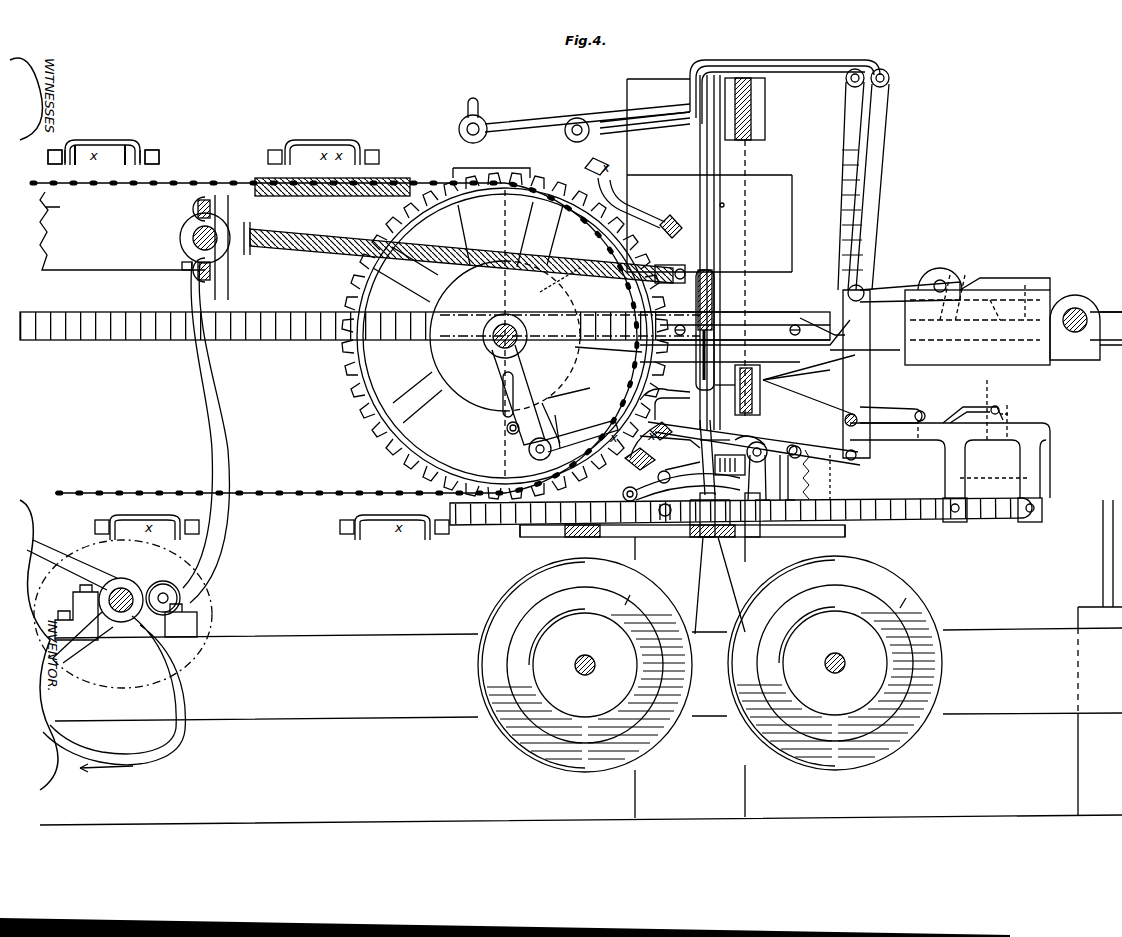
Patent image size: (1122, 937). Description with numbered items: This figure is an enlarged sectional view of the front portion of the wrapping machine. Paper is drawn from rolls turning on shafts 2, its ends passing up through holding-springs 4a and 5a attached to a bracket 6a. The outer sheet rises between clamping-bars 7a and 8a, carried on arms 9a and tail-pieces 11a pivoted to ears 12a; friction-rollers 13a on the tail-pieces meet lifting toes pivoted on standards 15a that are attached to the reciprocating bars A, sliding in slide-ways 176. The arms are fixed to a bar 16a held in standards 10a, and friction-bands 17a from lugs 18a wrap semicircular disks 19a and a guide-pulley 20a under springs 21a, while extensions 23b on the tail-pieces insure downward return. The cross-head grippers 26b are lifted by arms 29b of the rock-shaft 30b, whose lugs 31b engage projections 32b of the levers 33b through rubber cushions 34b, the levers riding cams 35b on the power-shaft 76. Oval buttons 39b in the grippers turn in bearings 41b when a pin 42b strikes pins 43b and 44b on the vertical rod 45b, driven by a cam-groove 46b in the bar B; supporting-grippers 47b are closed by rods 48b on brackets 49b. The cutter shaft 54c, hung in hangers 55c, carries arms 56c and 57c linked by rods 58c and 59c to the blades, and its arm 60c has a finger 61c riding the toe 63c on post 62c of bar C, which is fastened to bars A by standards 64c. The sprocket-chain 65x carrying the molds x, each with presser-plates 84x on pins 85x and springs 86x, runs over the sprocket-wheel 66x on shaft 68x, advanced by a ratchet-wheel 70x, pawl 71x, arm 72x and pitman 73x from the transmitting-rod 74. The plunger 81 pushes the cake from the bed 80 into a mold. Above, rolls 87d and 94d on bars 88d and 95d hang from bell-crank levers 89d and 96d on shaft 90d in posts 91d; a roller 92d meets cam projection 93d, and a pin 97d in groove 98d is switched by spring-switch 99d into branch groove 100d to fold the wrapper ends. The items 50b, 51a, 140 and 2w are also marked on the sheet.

The shafts 2 is at (489, 617).
The holding-spring 4a is at (730, 508).
The holding-spring 5a is at (673, 501).
The bracket 6a is at (701, 512).
The clamping-bar 7a is at (702, 457).
The clamping-bar 8a is at (718, 441).
The arms 9a is at (730, 458).
The standards 10a is at (760, 490).
The tail-pieces 11a is at (670, 452).
The ears 12a is at (686, 474).
The friction-rollers 13a is at (623, 494).
The standards 15a is at (655, 477).
The bar 16a is at (762, 471).
The friction-bands 17a is at (787, 472).
The lugs 18a is at (756, 433).
The semicircular disks 19a is at (787, 490).
The guide-pulley 20a is at (827, 474).
The springs 21a is at (821, 474).
The extensions 23b is at (672, 260).
The spring-grippers 26b is at (693, 330).
The arms 29b is at (575, 282).
The rock-shaft 30b is at (193, 240).
The lugs 31b is at (238, 292).
The lateral projections 32b is at (196, 285).
The levers 33b is at (200, 390).
The rubber cushions 34b is at (184, 232).
The cams 35b is at (182, 688).
The oval-shaped buttons 39b is at (676, 405).
The bearings 41b is at (730, 62).
The pin 42b is at (760, 386).
The pin 43b is at (724, 205).
The pin 44b is at (748, 381).
The vertical rod 45b is at (725, 290).
The cam-groove 46b is at (745, 328).
The supporting-grippers 47b is at (710, 252).
The rods 48b is at (730, 216).
The brackets 49b is at (752, 156).
The pipe 50b is at (665, 402).
The clamp 51a is at (651, 446).
The shaft 54c is at (831, 417).
The hangers 55c is at (891, 406).
The arms 56c is at (796, 390).
The arms 57c is at (754, 443).
The rods 58c is at (809, 385).
The rods 59c is at (788, 440).
The rearwardly-projecting arm 60c is at (920, 410).
The laterally-projecting finger 61c is at (969, 405).
The vertically-adjustable post 62c is at (1018, 412).
The angular toe 63c is at (962, 405).
The standards 64c is at (995, 473).
The sprocket-chain 65x is at (95, 190).
The sprocket-wheel 66x is at (358, 373).
The shaft 68x is at (492, 333).
The ratchet-wheel 70x is at (500, 395).
The pawl 71x is at (522, 425).
The arm 72x is at (528, 445).
The pitman 73x is at (581, 435).
The transmitting-rod 74 is at (1109, 315).
The power-shaft 76 is at (128, 585).
The bed 80 is at (820, 339).
The plunger 81 is at (820, 315).
The presser-plates 84x is at (101, 142).
The pins 85x is at (100, 155).
The springs 86x is at (102, 141).
The roll 87d is at (591, 134).
The bar 88d is at (714, 116).
The bell-crank lever 89d is at (851, 179).
The shaft 90d is at (885, 280).
The posts 91d is at (854, 372).
The friction-roller 92d is at (940, 278).
The cam projection 93d is at (1031, 279).
The roll 94d is at (460, 124).
The bar 95d is at (520, 120).
The bell-crank lever 96d is at (885, 127).
The pin 97d is at (965, 280).
The groove 98d is at (995, 289).
The spring-switch 99d is at (1075, 305).
The branch groove 100d is at (977, 321).
The hatched bar 140 is at (338, 198).
The slide-ways 176 is at (682, 538).
The reciprocating bars A is at (741, 519).
The reciprocating bar B is at (571, 326).
The reciprocating bar C is at (950, 472).
The boxes or molds x is at (633, 198).
The wheel 2w is at (710, 664).